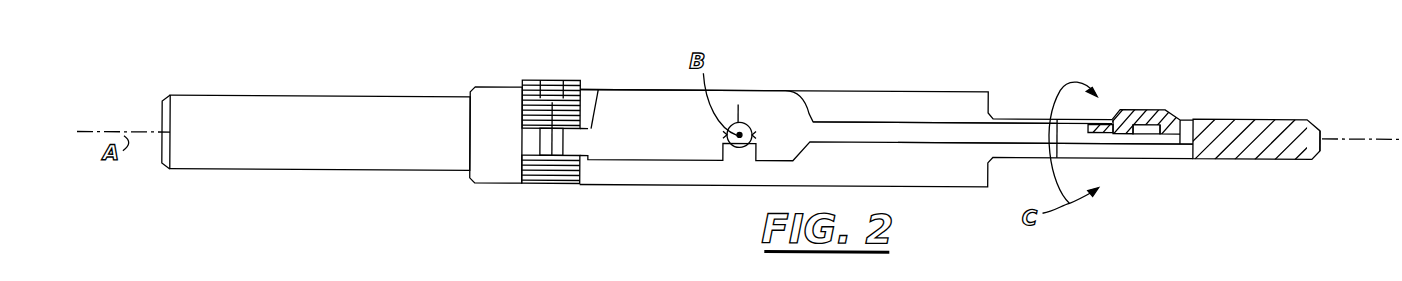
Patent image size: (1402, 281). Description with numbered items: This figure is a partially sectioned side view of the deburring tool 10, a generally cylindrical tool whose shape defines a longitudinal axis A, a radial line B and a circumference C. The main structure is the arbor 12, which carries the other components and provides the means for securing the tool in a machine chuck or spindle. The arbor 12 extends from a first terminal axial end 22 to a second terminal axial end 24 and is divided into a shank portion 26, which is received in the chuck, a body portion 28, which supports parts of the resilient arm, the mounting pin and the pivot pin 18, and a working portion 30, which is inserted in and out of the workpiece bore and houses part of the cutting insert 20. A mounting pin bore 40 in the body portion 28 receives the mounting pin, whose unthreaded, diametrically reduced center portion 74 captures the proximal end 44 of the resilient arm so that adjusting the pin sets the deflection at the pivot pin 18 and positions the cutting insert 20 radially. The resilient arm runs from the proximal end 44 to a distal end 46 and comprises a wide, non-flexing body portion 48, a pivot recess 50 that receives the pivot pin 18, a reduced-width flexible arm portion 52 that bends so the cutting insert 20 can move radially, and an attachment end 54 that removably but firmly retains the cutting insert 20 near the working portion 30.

The deburring tool 10 is at (888, 52).
The arbor 12 is at (613, 184).
The pivot pin 18 is at (740, 150).
The cutting insert 20 is at (1135, 101).
The first terminal axial end 22 is at (162, 110).
The second terminal axial end 24 is at (1323, 125).
The shank portion 26 is at (249, 117).
The body portion 28 is at (908, 182).
The working portion 30 is at (1252, 123).
The mounting pin bore 40 is at (527, 141).
The proximal end 44 is at (583, 141).
The distal end 46 is at (1153, 132).
The body portion 48 is at (738, 101).
The pivot recess 50 is at (743, 125).
The flexible arm portion 52 is at (898, 138).
The attachment end 54 is at (1115, 131).
The center portion 74 is at (552, 145).